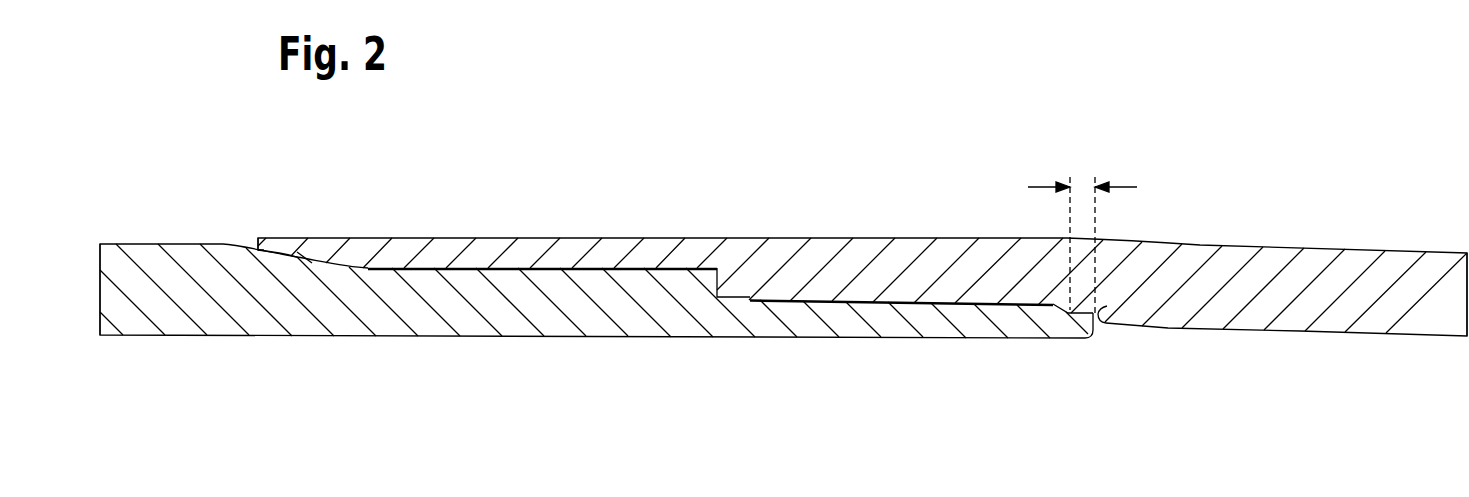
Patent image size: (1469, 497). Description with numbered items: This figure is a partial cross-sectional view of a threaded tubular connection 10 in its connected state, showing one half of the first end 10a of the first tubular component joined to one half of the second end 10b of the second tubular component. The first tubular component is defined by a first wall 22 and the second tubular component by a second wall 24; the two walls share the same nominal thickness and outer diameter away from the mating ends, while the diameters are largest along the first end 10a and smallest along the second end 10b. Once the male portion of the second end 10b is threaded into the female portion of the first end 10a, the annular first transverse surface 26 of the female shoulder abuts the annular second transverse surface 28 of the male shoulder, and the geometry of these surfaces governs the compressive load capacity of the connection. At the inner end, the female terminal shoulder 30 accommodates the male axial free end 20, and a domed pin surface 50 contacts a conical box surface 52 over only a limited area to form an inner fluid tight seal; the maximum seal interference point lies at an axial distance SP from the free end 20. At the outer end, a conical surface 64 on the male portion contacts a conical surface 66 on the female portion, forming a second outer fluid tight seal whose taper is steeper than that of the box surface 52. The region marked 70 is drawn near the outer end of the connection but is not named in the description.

The threaded tubular connection 10 is at (951, 185).
The first end 10a is at (628, 200).
The second end 10b is at (528, 383).
The male axial free end 20 is at (1098, 326).
The first wall 22 is at (1443, 297).
The second wall 24 is at (144, 289).
The first transverse surface 26 is at (716, 277).
The second transverse surface 28 is at (718, 296).
The terminal shoulder 30 is at (1100, 312).
The pin surface 50 is at (1074, 325).
The box surface 52 is at (1082, 307).
The surface 64 is at (298, 257).
The surface 66 is at (307, 258).
The notch of first member 70 is at (257, 246).
The axial distance SP is at (1082, 185).